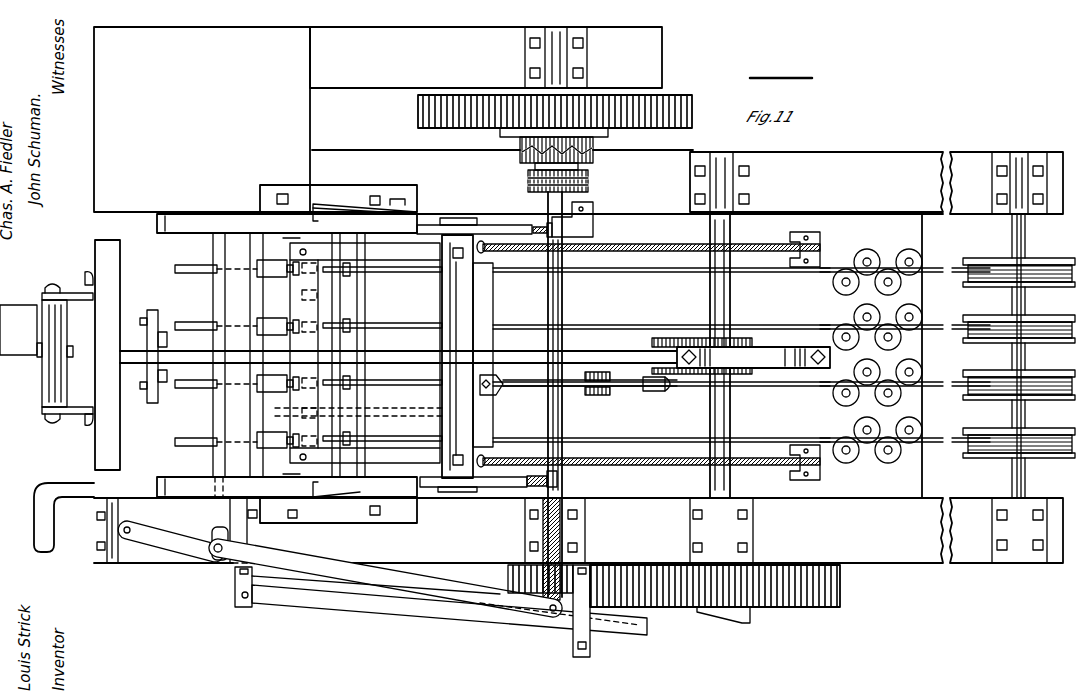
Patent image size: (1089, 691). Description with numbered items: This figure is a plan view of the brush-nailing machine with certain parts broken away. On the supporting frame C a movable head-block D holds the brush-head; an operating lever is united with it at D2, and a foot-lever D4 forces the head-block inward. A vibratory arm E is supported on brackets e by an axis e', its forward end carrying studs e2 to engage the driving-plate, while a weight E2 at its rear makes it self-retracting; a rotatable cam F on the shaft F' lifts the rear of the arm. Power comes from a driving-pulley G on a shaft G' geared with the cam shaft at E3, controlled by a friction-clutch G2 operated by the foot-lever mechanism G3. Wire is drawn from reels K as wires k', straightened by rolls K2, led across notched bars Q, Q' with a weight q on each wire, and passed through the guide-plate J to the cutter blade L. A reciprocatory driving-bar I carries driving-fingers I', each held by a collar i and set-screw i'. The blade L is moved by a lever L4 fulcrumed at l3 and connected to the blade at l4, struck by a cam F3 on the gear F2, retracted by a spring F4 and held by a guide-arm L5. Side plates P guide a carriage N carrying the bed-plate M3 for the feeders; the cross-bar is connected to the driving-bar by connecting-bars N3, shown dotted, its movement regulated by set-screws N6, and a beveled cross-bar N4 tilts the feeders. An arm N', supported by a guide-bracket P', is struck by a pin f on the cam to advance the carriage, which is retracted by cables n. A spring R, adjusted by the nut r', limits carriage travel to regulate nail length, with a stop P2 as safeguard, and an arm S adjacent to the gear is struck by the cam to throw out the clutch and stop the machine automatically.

The supporting frame C is at (578, 357).
The driving-pulley G is at (555, 116).
The friction-clutch G2 is at (571, 165).
The shaft G' is at (566, 394).
The foot-lever mechanism G3 is at (64, 517).
The spring R is at (338, 354).
The nut r' is at (376, 359).
The side plate P is at (287, 355).
The stop P2 is at (578, 238).
The guide-bracket P' is at (597, 394).
The bed-plate M3 is at (272, 235).
The carriage N is at (474, 354).
The arm N' is at (550, 213).
The connecting-bar N3 is at (360, 400).
The cross-bar N4 is at (467, 356).
The set-screw N6 is at (528, 486).
The cable n is at (648, 354).
The movable head-block D is at (104, 355).
The lever connection D2 is at (67, 349).
The foot-lever D4 is at (21, 331).
The vibratory arm E is at (398, 346).
The weight E2 is at (753, 355).
The gearing E3 is at (637, 546).
The supporting-bracket e is at (258, 380).
The axis e' is at (255, 339).
The stud e2 is at (148, 351).
The driving-bar I is at (261, 355).
The driving-finger I' is at (216, 357).
The collar i is at (278, 354).
The set-screw i' is at (300, 354).
The guide-plate J is at (224, 365).
The cutter blade L is at (215, 420).
The lever L4 is at (368, 544).
The guide-arm L5 is at (569, 611).
The fulcrum l3 is at (171, 529).
The connection l4 is at (381, 564).
The notched bar Q is at (343, 355).
The notched bar Q' is at (374, 355).
The weight q is at (382, 354).
The rotatable cam F is at (702, 339).
The shaft F' is at (661, 356).
The gear F2 is at (715, 598).
The cam F3 is at (724, 626).
The spring F4 is at (539, 563).
The pin f is at (656, 392).
The wire k' is at (735, 345).
The reel K is at (1019, 356).
The roll K2 is at (877, 343).
The arm S is at (441, 602).